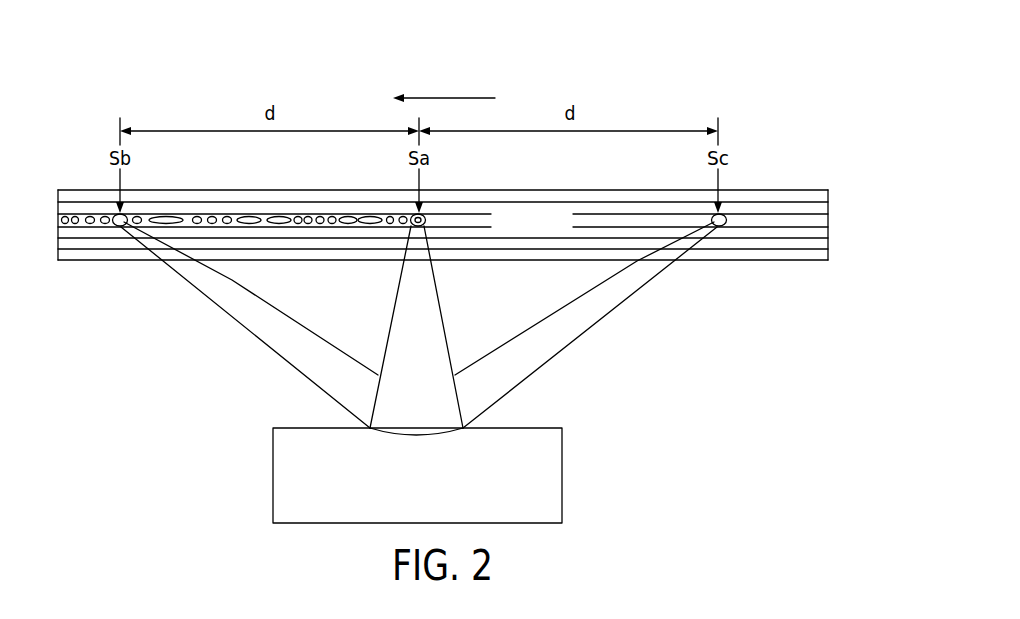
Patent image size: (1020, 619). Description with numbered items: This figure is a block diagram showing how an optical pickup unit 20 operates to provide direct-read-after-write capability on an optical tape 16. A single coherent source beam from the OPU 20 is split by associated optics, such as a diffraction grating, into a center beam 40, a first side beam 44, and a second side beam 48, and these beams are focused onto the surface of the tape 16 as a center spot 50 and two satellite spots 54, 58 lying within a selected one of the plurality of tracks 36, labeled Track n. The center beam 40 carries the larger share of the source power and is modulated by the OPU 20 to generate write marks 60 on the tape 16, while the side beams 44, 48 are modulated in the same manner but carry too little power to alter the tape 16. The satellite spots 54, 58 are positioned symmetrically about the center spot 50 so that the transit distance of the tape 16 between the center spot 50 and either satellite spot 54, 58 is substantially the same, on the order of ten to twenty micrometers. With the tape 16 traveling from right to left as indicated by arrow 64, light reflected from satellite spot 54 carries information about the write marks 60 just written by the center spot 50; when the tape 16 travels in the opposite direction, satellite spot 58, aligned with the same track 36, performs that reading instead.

The optical tape 16 is at (787, 190).
The optical pickup unit 20 is at (553, 470).
The tracks 36 is at (838, 196).
The center beam 40 is at (460, 302).
The first side beam 44 is at (274, 365).
The second side beam 48 is at (566, 364).
The center spot 50 is at (425, 211).
The satellite spot 54 is at (116, 228).
The satellite spot 58 is at (724, 228).
The write marks 60 is at (360, 207).
The arrow 64 is at (452, 97).